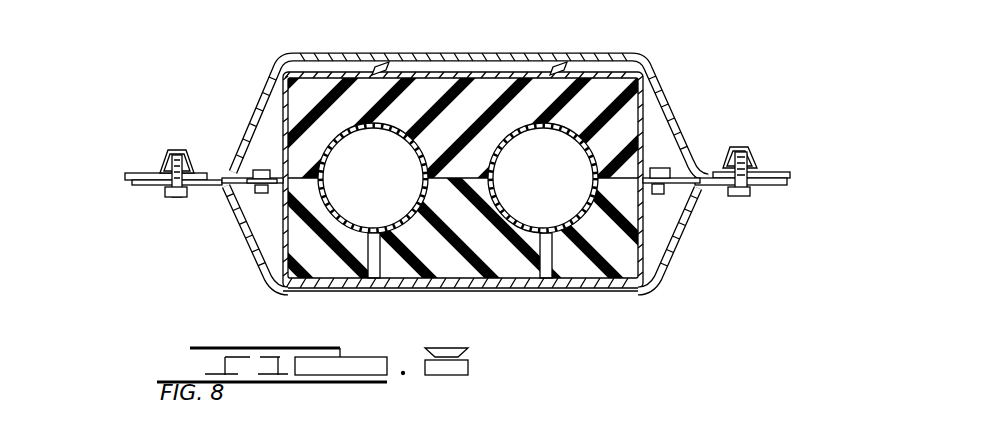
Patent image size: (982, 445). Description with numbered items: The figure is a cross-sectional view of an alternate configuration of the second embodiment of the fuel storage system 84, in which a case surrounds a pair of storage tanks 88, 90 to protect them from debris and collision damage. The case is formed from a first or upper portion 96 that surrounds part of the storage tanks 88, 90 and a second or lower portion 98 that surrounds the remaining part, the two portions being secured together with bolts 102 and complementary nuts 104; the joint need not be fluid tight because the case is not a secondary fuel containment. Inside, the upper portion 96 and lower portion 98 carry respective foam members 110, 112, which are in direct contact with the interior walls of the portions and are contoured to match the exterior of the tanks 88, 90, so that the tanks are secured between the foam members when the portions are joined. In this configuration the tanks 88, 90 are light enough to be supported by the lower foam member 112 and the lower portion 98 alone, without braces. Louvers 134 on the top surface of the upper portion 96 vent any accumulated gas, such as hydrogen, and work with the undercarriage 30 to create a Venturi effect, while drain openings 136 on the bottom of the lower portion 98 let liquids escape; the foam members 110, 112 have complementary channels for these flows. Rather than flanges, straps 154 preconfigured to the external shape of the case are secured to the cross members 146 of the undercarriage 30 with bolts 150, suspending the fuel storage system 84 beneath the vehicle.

The undercarriage 30 is at (438, 55).
The fuel storage system 84 is at (716, 54).
The storage tank 88 is at (562, 191).
The storage tank 90 is at (392, 191).
The upper portion 96 is at (282, 127).
The lower portion 98 is at (267, 238).
The bolt 102 is at (660, 160).
The nut 104 is at (663, 190).
The foam member 110 is at (606, 76).
The lower foam member 112 is at (513, 262).
The louver 134 is at (374, 72).
The drain opening 136 is at (372, 273).
The cross member 146 is at (178, 150).
The bolt 150 is at (762, 170).
The strap 154 is at (665, 243).